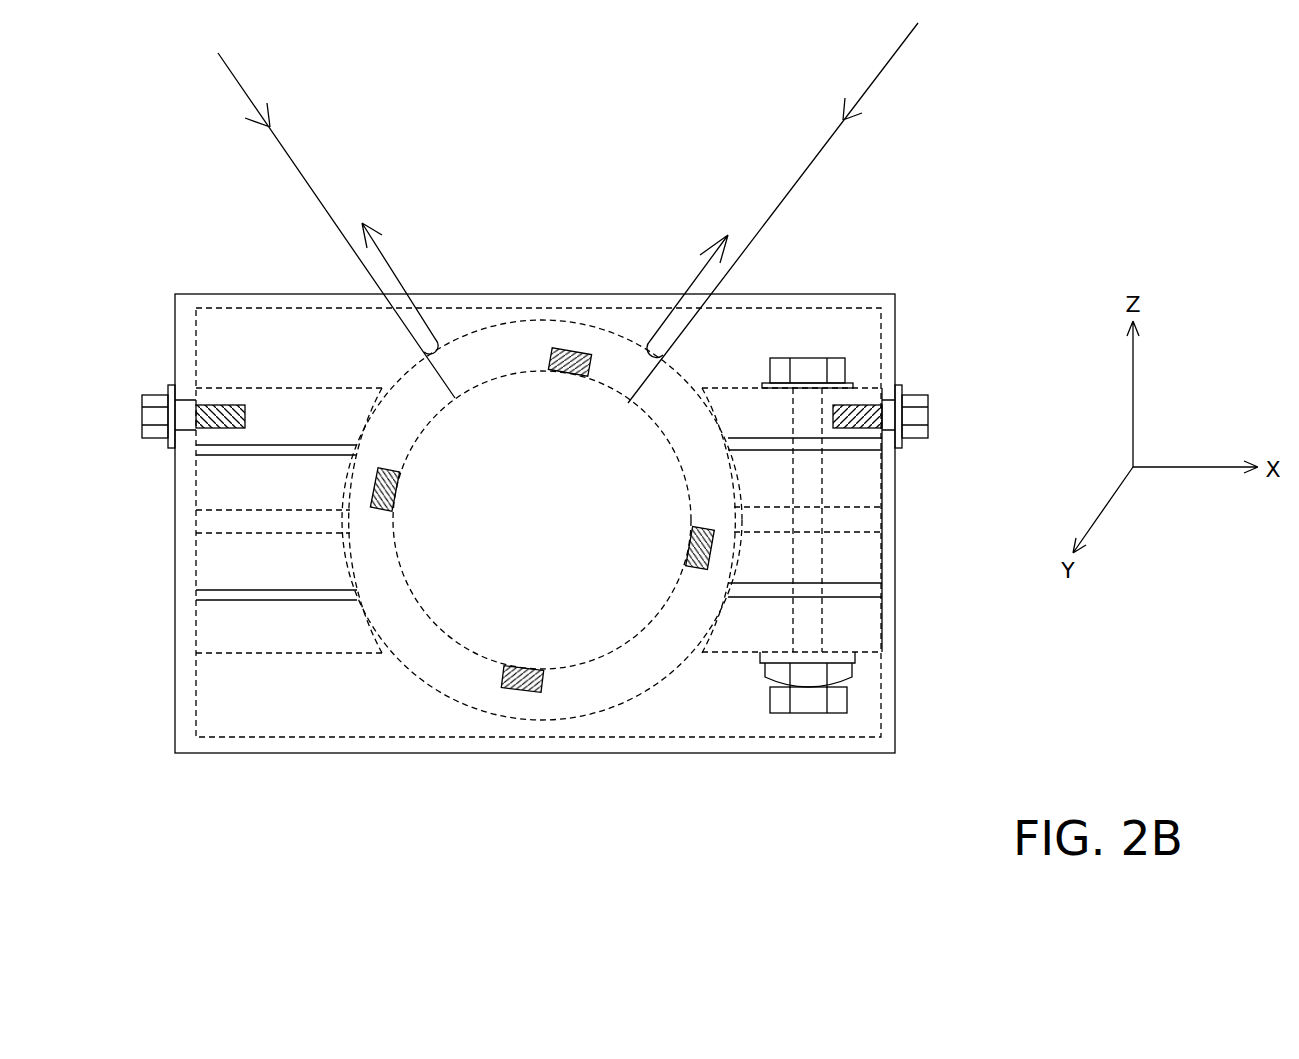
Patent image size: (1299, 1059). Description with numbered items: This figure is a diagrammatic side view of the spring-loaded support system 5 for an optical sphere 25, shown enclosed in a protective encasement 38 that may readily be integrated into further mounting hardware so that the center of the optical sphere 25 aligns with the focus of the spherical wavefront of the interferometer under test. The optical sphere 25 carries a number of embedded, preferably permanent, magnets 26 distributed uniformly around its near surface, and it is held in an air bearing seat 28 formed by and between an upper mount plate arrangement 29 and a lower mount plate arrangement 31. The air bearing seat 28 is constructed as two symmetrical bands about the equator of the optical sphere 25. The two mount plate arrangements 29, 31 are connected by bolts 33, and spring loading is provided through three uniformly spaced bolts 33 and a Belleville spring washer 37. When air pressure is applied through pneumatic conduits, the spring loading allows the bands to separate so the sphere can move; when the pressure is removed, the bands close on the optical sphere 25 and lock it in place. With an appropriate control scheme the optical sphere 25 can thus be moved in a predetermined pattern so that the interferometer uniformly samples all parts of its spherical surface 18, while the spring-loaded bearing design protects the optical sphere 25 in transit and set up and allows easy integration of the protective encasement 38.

The optical assembly 5 is at (1030, 213).
The spherical surface 18 is at (468, 332).
The optical sphere 25 is at (515, 336).
The magnets 26 is at (567, 347).
The air bearing seat 28 is at (388, 652).
The upper mount plate arrangement 29 is at (758, 337).
The lower mount plate arrangement 31 is at (700, 707).
The bolts 33 is at (807, 365).
The spring washer 37 is at (840, 676).
The protective encasement 38 is at (390, 770).